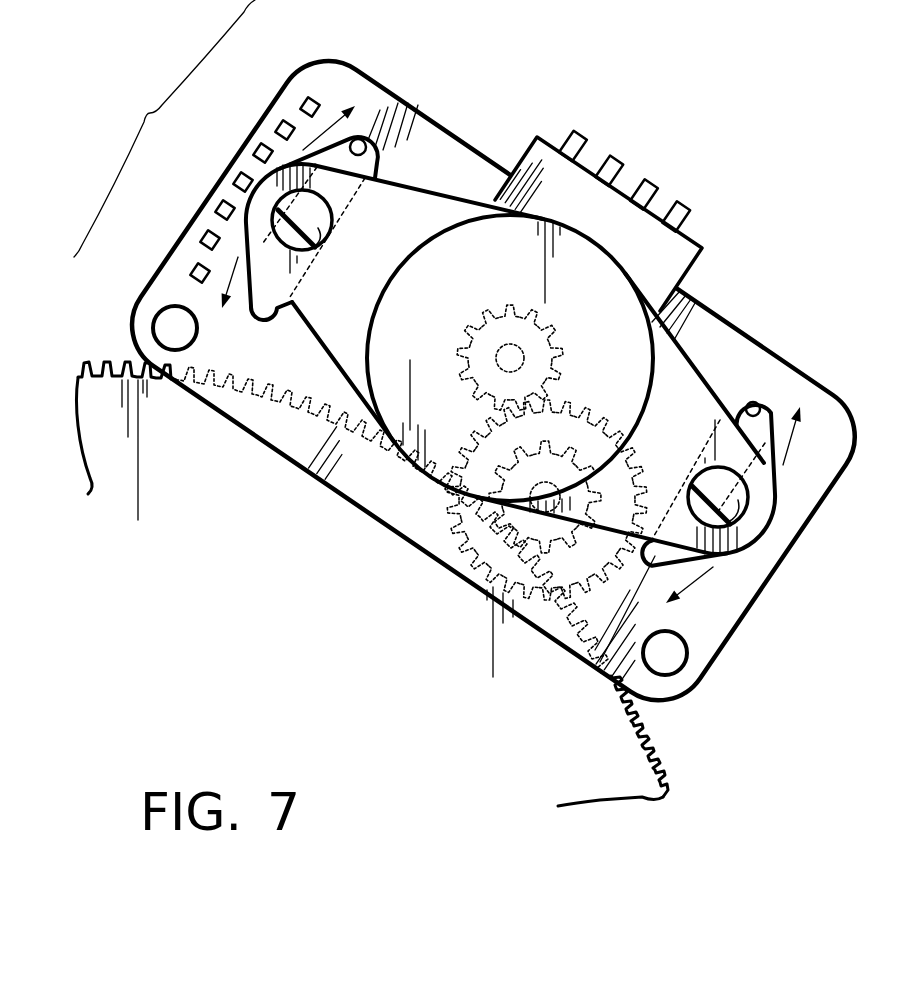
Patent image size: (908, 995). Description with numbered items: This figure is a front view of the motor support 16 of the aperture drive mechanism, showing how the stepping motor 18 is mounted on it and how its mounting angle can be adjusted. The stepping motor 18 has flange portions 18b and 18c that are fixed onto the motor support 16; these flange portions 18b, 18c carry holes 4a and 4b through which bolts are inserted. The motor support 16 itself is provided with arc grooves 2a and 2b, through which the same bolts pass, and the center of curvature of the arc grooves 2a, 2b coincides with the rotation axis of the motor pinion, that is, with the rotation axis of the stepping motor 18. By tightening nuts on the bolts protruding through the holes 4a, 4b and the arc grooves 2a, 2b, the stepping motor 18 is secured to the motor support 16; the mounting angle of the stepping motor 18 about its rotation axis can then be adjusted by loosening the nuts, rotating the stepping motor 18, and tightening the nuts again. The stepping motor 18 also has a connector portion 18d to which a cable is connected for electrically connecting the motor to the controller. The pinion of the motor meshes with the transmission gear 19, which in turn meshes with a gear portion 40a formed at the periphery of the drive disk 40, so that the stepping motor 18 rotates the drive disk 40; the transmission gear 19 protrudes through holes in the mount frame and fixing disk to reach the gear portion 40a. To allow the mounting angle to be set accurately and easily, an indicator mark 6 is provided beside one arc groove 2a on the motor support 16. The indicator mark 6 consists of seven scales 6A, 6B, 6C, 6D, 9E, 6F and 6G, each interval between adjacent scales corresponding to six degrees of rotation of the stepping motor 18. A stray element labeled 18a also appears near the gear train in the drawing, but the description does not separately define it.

The indicator mark 6 is at (164, 128).
The scale 6A is at (303, 100).
The scale 6B is at (278, 124).
The scale 6C is at (256, 148).
The scale 6D is at (236, 178).
The sensor 9E is at (218, 206).
The scale 6F is at (203, 238).
The scale 6G is at (193, 271).
The arc groove 2a is at (372, 138).
The arc groove 2b is at (768, 410).
The hole 4a is at (333, 225).
The hole 4b is at (750, 503).
The motor support 16 is at (853, 455).
The stepping motor 18 is at (726, 238).
The motor pinion 18a is at (468, 332).
The flange portion 18b is at (420, 198).
The flange portion 18c is at (678, 393).
The connector portion 18d is at (613, 190).
The transmission gear 19 is at (448, 540).
The drive disk 40 is at (408, 613).
The gear portion 40a is at (663, 763).